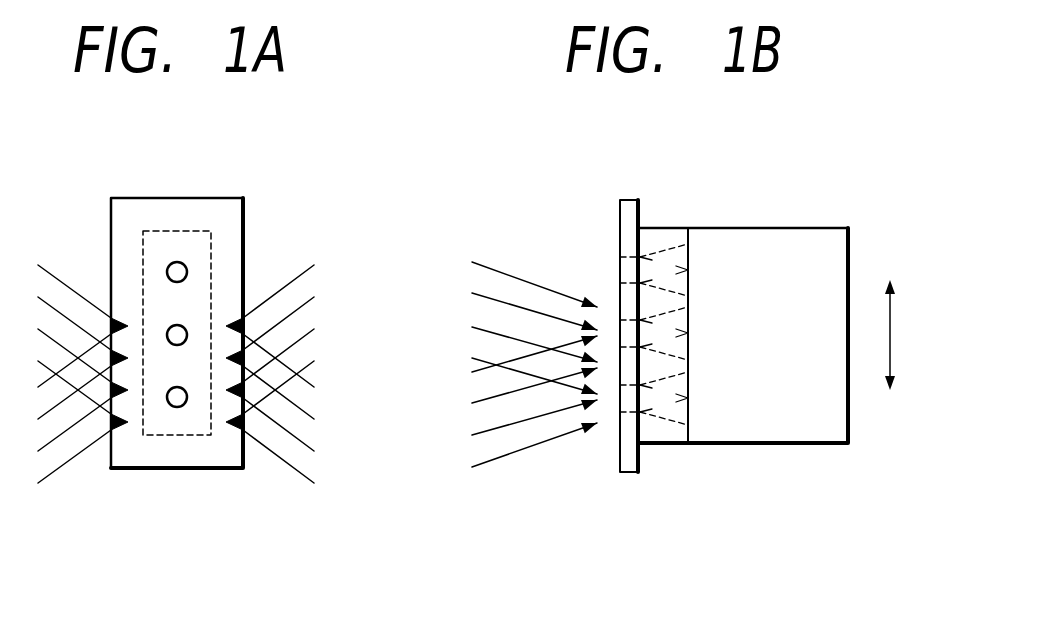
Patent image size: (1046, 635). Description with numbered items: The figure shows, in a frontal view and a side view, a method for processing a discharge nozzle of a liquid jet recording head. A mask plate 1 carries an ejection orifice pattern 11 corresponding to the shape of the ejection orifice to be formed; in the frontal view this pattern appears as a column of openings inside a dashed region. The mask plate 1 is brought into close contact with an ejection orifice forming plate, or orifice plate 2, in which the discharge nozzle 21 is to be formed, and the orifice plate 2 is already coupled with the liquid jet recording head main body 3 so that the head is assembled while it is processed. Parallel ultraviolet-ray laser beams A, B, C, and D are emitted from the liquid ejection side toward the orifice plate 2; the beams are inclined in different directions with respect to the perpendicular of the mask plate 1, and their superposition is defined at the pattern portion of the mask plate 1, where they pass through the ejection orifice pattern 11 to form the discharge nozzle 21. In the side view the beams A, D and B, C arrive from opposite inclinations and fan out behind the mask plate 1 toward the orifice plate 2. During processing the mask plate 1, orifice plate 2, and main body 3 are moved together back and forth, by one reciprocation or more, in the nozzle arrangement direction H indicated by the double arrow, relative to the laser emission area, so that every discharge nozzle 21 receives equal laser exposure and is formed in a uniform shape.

In FIG. 1A, the mask plate 1 is at (177, 460).
In FIG. 1B, the mask plate 1 is at (627, 474).
In FIG. 1A, the ejection orifice forming plate 2 is at (160, 231).
In FIG. 1B, the ejection orifice forming plate 2 is at (656, 236).
In FIG. 1B, the liquid jet recording head main body 3 is at (782, 445).
In FIG. 1A, the ejection orifice pattern 11 is at (182, 266).
In FIG. 1B, the ejection orifice pattern 11 is at (641, 399).
In FIG. 1B, the discharge nozzle 21 is at (693, 264).
In FIG. 1A, the ultraviolet-ray laser beam A is at (296, 266).
In FIG. 1B, the ultraviolet-ray laser beam A is at (515, 320).
In FIG. 1A, the ultraviolet-ray laser beam B is at (287, 478).
In FIG. 1B, the ultraviolet-ray laser beam B is at (515, 408).
In FIG. 1A, the ultraviolet-ray laser beam C is at (62, 478).
In FIG. 1A, the ultraviolet-ray laser beam D is at (63, 266).
In FIG. 1B, the arrangement direction H is at (903, 335).